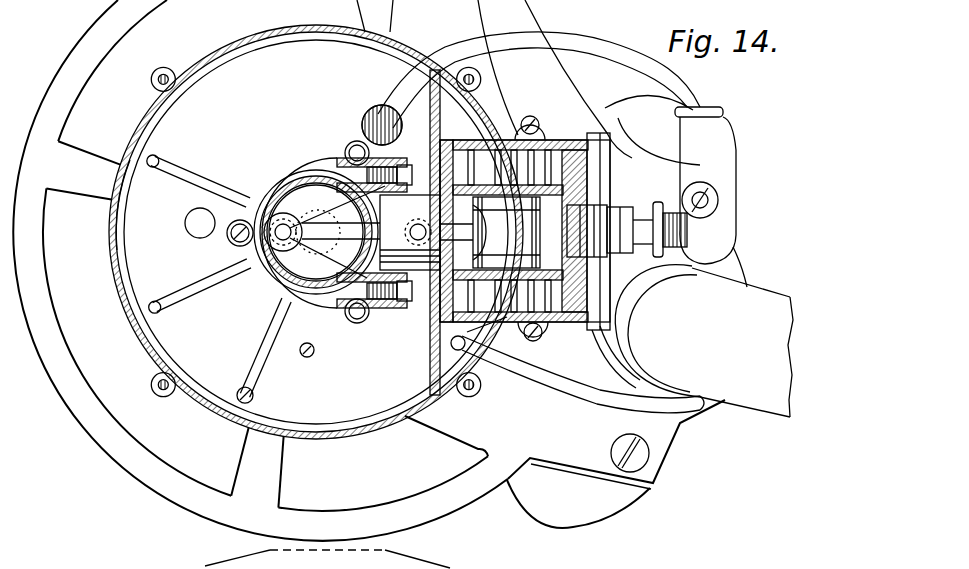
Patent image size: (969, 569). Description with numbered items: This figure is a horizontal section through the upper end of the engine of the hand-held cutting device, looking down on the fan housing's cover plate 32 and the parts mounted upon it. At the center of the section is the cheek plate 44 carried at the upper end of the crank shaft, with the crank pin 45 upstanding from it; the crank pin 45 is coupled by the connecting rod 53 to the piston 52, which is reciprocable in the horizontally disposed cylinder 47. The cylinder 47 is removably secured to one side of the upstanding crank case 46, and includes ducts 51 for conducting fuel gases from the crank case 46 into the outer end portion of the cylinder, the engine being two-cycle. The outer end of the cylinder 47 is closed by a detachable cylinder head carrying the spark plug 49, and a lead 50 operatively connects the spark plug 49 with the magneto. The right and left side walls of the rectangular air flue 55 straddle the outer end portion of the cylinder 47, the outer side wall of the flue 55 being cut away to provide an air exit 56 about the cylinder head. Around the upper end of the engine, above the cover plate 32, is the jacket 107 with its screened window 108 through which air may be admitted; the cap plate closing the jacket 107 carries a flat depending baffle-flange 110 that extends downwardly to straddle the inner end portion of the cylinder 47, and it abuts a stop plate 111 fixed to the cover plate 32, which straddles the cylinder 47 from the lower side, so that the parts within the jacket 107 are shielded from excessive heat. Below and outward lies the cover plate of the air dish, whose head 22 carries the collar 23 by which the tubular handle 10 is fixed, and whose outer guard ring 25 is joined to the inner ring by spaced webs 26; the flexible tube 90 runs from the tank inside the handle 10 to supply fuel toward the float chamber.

The curved handle 10 is at (759, 300).
The head 22 is at (580, 452).
The collar 23 is at (605, 340).
The outer guard ring 25 is at (128, 453).
The spaced webs 26 is at (265, 460).
The cover plate 32 is at (197, 102).
The cheek plate 44 is at (327, 204).
The crank pin 45 is at (250, 271).
The crank case 46 is at (273, 187).
The cylinder 47 is at (483, 222).
The spark plug 49 is at (613, 208).
The lead 50 is at (598, 44).
The ducts 51 is at (481, 143).
The piston 52 is at (486, 248).
The connecting rod 53 is at (347, 236).
The rectangular air flue 55 is at (606, 108).
The air exit 56 is at (620, 157).
The flexible tube 90 is at (577, 403).
The jacket 107 is at (268, 38).
The screened window 108 is at (118, 250).
The baffle-flange 110 is at (433, 342).
The stop plate 111 is at (432, 299).